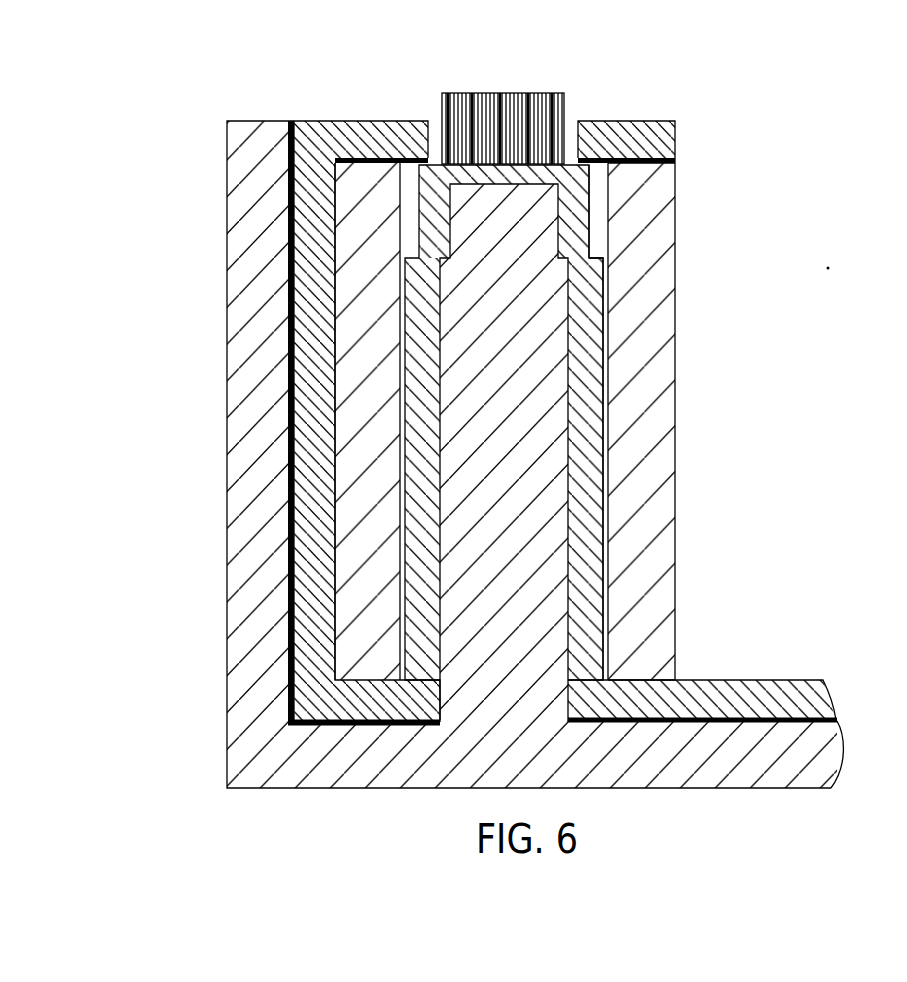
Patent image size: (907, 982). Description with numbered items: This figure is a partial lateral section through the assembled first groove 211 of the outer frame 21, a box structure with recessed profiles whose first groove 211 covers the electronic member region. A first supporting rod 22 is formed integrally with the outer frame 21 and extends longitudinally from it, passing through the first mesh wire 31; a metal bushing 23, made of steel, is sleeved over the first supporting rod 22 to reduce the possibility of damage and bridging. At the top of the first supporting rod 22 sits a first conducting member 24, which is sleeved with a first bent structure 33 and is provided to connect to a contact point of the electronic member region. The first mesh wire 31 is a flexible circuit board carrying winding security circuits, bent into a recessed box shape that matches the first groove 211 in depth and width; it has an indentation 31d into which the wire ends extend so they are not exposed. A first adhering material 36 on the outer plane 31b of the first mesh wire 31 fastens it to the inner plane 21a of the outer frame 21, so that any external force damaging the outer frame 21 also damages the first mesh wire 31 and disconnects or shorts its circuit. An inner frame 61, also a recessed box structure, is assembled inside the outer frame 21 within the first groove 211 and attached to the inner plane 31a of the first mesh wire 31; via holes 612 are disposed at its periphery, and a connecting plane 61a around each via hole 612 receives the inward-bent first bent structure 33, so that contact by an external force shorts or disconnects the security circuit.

The outer frame 21 is at (692, 752).
The inner plane of the outer frame 21a is at (290, 572).
The first groove 211 is at (785, 725).
The first supporting rod 22 is at (512, 483).
The bushing 23 is at (587, 427).
The first conducting member 24 is at (505, 128).
The first mesh wire 31 is at (300, 309).
The inner plane of the first mesh wire 31a is at (333, 257).
The outer plane of the first mesh wire 31b is at (288, 217).
The indentation 31d is at (770, 680).
The first bent structure 33 is at (628, 138).
The first adhering material 36 is at (371, 160).
The inner frame 61 is at (670, 285).
The connecting plane 61a is at (650, 167).
The via hole 612 is at (604, 245).